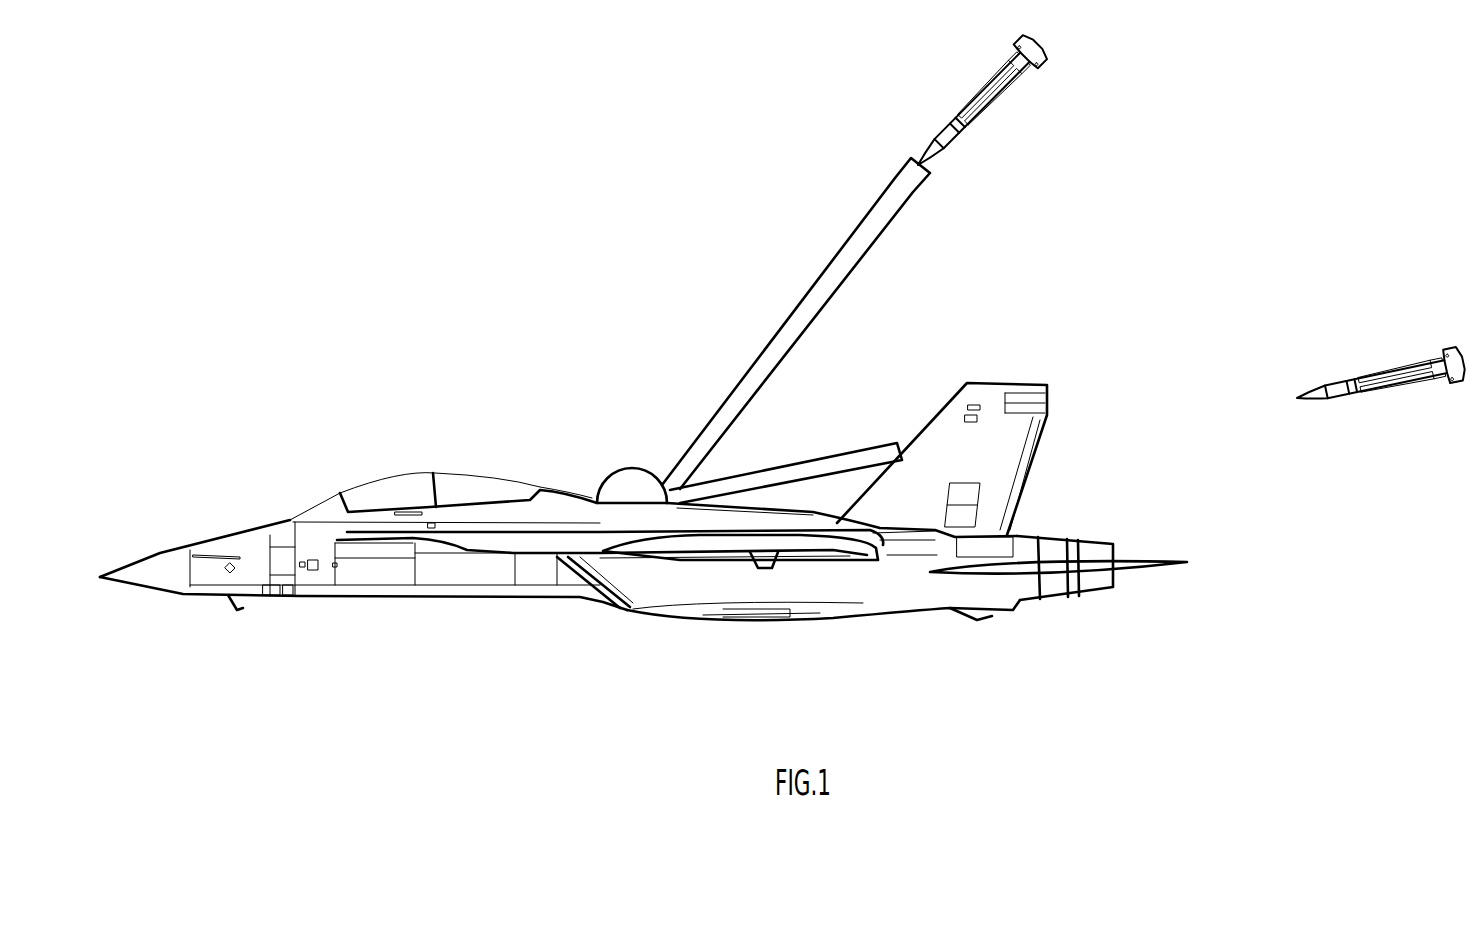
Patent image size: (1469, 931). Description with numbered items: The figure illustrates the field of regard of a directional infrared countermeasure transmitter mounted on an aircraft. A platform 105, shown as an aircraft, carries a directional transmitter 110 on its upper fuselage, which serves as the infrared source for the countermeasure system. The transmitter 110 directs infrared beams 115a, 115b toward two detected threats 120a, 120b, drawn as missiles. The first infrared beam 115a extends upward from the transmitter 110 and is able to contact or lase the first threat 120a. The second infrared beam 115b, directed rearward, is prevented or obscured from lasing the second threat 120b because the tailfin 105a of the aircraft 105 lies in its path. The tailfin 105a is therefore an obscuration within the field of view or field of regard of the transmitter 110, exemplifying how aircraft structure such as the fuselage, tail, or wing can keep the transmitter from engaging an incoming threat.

The platform 105 is at (253, 527).
The tailfin 105a is at (985, 380).
The directional transmitter 110 is at (605, 478).
The infrared beam 115a is at (896, 186).
The infrared beam 115b is at (855, 447).
The threat 120a is at (945, 118).
The threat 120b is at (1397, 362).